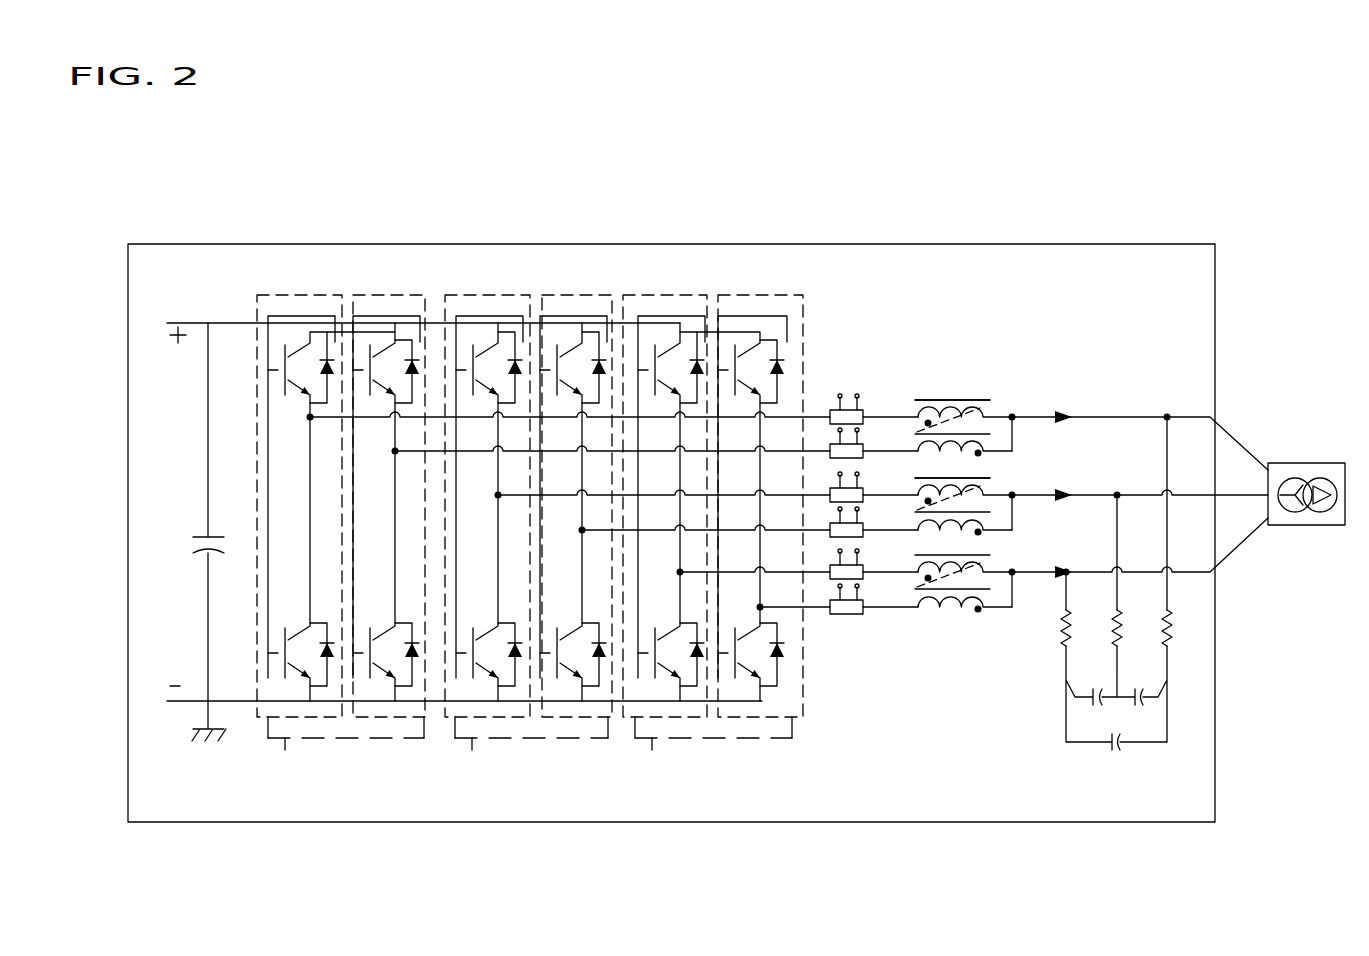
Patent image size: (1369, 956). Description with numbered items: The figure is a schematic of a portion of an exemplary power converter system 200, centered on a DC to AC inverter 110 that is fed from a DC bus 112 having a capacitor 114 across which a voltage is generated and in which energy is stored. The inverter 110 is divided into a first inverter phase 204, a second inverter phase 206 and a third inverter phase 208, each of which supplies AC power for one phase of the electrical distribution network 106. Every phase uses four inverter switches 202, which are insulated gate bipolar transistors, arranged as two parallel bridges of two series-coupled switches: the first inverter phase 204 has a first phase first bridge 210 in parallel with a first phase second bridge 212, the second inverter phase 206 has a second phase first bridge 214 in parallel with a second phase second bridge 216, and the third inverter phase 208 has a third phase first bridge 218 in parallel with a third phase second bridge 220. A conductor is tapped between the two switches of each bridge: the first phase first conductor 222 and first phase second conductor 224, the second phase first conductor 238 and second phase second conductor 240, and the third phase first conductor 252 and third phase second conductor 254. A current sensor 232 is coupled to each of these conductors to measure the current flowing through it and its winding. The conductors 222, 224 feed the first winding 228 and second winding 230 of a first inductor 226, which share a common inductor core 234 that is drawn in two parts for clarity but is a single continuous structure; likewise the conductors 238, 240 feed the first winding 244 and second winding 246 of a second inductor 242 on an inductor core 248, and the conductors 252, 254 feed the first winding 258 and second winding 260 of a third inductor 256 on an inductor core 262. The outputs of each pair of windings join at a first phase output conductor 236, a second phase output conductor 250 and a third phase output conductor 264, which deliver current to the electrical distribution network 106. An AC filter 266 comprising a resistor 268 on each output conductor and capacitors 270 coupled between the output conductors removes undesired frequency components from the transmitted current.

The electrical distribution network 106 is at (1305, 463).
The inverter 110 is at (200, 283).
The DC bus 112 is at (160, 397).
The capacitor 114 is at (191, 558).
The power converter system 200 is at (813, 244).
The inverter switch 202 is at (300, 333).
The first inverter phase 204 is at (285, 755).
The second inverter phase 206 is at (472, 755).
The third inverter phase 208 is at (652, 755).
The first phase first bridge 210 is at (262, 292).
The first phase second bridge 212 is at (356, 292).
The second phase first bridge 214 is at (449, 292).
The second phase second bridge 216 is at (546, 292).
The third phase first bridge 218 is at (628, 292).
The third phase second bridge 220 is at (723, 292).
The first phase first conductor 222 is at (328, 420).
The first phase second conductor 224 is at (408, 451).
The first inductor 226 is at (1006, 396).
The first winding 228 is at (915, 408).
The second winding 230 is at (918, 447).
The current sensor 232 is at (830, 495).
The inductor core 234 is at (977, 396).
The first phase output conductor 236 is at (1105, 417).
The second phase first conductor 238 is at (513, 495).
The second phase second conductor 240 is at (597, 530).
The second inductor 242 is at (1043, 460).
The first winding 244 is at (918, 492).
The second winding 246 is at (918, 527).
The inductor core 248 is at (977, 481).
The second phase output conductor 250 is at (1117, 495).
The third phase first conductor 252 is at (695, 572).
The third phase second conductor 254 is at (760, 607).
The third inductor 256 is at (987, 621).
The first winding 258 is at (918, 568).
The second winding 260 is at (918, 605).
The inductor core 262 is at (1012, 604).
The third phase output conductor 264 is at (1090, 572).
The AC filter 266 is at (1120, 614).
The resistor 268 is at (1179, 620).
The capacitor 270 is at (1149, 705).